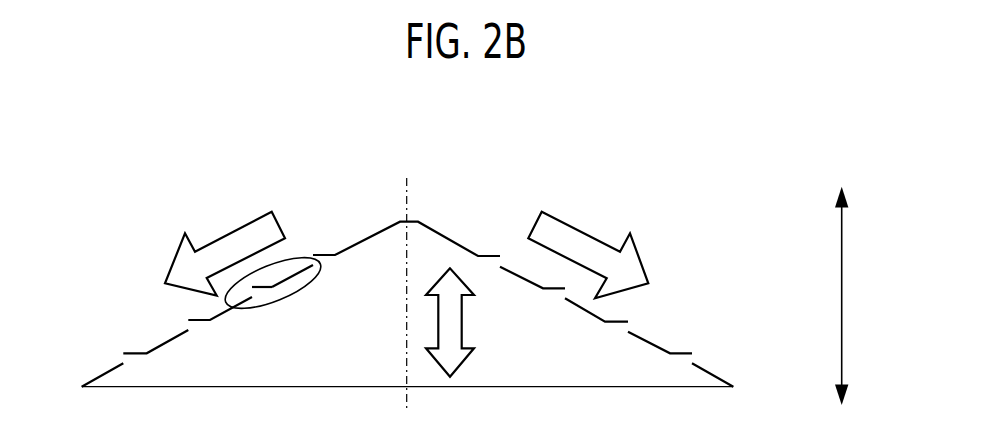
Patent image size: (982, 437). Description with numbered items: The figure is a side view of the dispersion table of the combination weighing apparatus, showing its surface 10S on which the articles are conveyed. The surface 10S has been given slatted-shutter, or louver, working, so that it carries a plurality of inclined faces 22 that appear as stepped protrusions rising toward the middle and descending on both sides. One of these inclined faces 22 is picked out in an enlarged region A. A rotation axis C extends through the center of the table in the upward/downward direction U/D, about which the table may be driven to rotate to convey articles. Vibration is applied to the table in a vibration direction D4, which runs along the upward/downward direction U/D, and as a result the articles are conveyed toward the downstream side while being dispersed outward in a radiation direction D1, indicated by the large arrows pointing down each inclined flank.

The surface 10S is at (112, 370).
The inclined face 22 is at (267, 288).
The enlarged region A is at (298, 256).
The rotation axis C is at (407, 277).
The radiation direction D1 is at (393, 248).
The vibration direction D4 is at (463, 322).
The upward direction U is at (852, 284).
The downward direction D is at (852, 381).